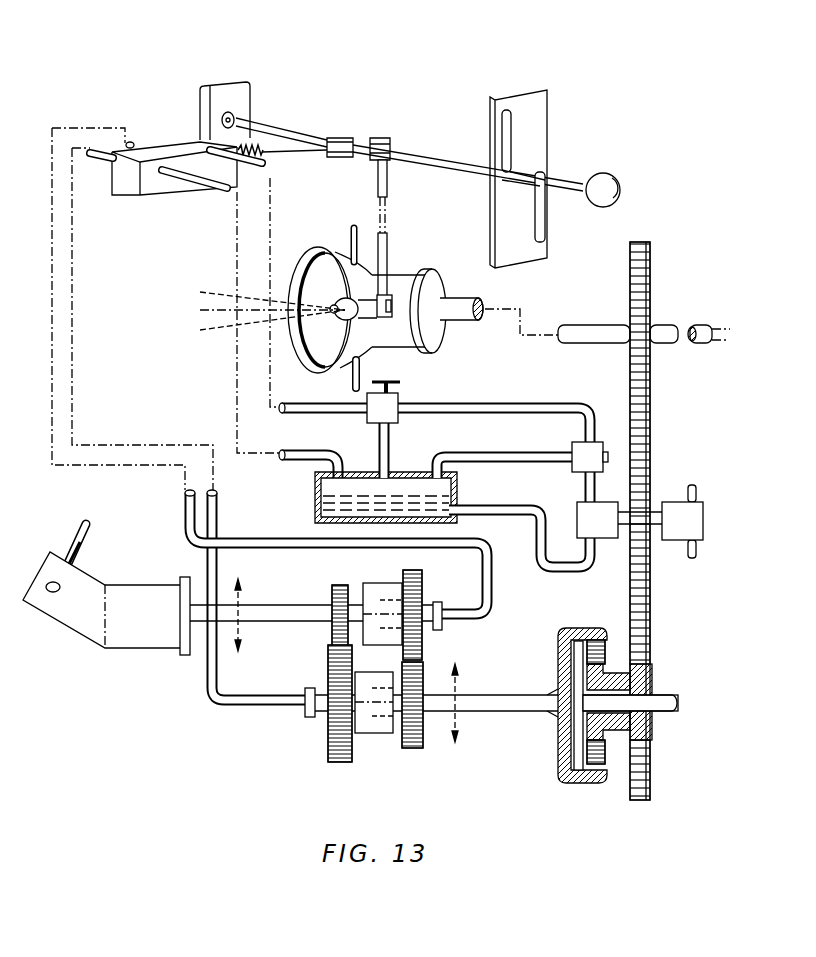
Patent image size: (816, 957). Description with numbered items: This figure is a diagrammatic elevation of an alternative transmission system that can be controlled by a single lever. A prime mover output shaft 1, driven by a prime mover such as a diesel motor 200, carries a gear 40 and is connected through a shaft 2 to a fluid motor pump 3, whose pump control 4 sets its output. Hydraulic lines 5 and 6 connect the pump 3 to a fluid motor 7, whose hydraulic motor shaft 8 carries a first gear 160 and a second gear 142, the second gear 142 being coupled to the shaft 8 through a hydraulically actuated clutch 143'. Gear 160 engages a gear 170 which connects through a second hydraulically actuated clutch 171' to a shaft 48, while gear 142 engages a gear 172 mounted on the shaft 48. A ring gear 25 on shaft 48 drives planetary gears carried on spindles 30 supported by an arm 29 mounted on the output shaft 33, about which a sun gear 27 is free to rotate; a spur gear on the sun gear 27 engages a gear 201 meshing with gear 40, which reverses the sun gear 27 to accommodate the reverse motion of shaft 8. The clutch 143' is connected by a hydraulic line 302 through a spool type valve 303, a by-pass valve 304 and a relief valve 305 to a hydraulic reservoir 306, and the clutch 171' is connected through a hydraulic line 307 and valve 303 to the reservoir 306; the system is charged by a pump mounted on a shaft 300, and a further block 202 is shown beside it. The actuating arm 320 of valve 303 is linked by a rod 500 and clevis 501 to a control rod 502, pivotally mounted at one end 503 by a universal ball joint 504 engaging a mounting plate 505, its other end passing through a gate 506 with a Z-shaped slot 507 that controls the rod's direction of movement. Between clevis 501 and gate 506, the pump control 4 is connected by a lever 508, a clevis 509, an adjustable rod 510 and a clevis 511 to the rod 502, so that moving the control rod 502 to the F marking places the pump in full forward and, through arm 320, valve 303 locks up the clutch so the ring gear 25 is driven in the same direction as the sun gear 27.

The universal ball joint 504 is at (232, 112).
The mounting plate 505 is at (250, 90).
The pivoted end of control rod 503 is at (226, 120).
The hydraulic line 302 is at (130, 142).
The actuating arm of valve 320 is at (250, 150).
The rod 500 is at (300, 138).
The clevis 501 is at (345, 135).
The clevis 511 is at (386, 140).
The control rod 502 is at (432, 160).
The gate 506 is at (543, 115).
The Z-shaped slot 507 is at (508, 132).
The hydraulic line 307 is at (98, 160).
The spool type valve 303 is at (150, 190).
The hydraulic line 5 is at (350, 236).
The adjustable rod 510 is at (388, 236).
The clevis 509 is at (387, 295).
The fluid motor pump 3 is at (308, 266).
The pump control 4 is at (331, 313).
The hydraulic line 6 is at (360, 353).
The lever 508 is at (365, 320).
The shaft 2 is at (457, 310).
The prime mover output shaft 1 is at (661, 330).
The diesel motor 200 is at (702, 332).
The gear 40 is at (637, 370).
The by-pass valve 304 is at (396, 421).
The relief valve 305 is at (575, 450).
The hydraulic reservoir 306 is at (457, 489).
The gear 201 is at (645, 452).
The shaft 300 is at (655, 511).
The cylinder block 202 is at (694, 512).
The fluid motor 7 is at (86, 612).
The first gear 160 is at (336, 593).
The hydraulically actuated clutch 143' is at (362, 597).
The second gear 142 is at (412, 594).
The hydraulic motor shaft 8 is at (292, 622).
The shaft 48 is at (487, 706).
The spindles 30 is at (606, 648).
The sun gear 27 is at (606, 674).
The output shaft 33 is at (666, 697).
The arm 29 is at (579, 682).
The ring gear 25 is at (562, 770).
The gear 170 is at (334, 760).
The second hydraulically actuated clutch 171' is at (376, 734).
The gear 172 is at (413, 744).